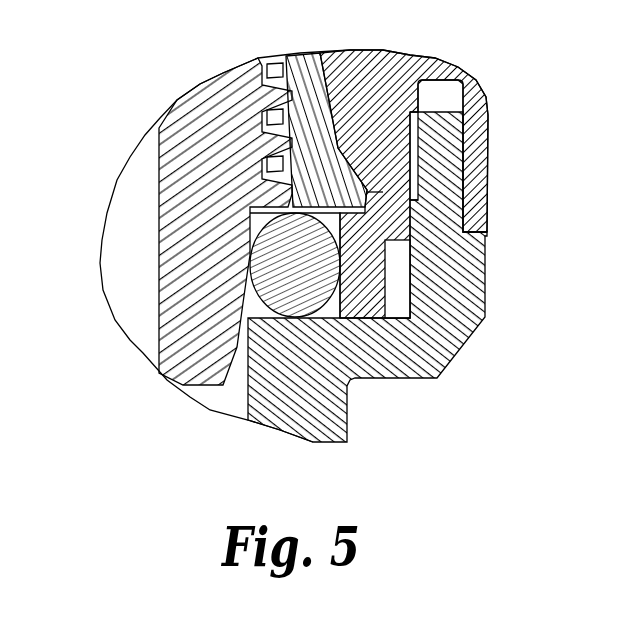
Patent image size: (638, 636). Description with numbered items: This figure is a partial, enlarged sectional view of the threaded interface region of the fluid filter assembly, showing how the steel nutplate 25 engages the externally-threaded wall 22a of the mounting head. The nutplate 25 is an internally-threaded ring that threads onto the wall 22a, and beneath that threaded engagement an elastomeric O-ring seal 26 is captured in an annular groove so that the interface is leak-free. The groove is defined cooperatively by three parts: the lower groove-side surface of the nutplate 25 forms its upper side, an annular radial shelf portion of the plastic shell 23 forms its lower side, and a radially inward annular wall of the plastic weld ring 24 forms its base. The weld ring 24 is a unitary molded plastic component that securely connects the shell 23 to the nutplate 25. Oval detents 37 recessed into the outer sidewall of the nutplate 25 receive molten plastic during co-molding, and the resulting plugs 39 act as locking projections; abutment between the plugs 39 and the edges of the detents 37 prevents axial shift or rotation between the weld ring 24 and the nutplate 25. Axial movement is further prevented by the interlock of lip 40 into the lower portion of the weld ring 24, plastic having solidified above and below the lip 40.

The externally-threaded wall 22a is at (192, 202).
The plastic shell 23 is at (455, 330).
The plastic weld ring 24 is at (415, 73).
The steel nutplate 25 is at (294, 63).
The O-ring seal 26 is at (293, 290).
The detents 37 is at (333, 150).
The plugs 39 is at (392, 54).
The lip 40 is at (385, 195).